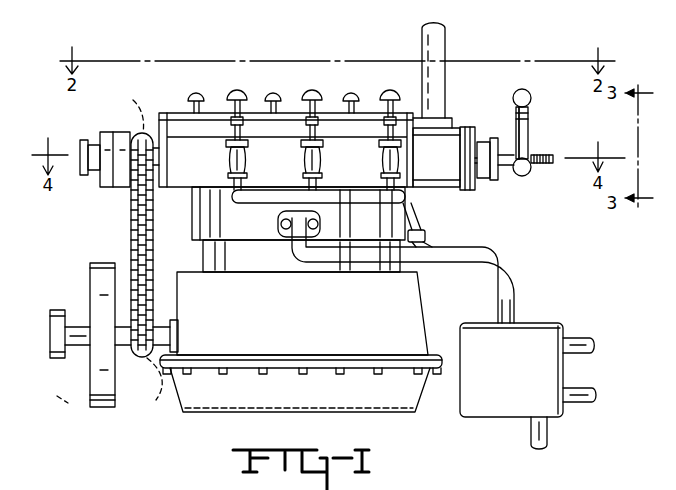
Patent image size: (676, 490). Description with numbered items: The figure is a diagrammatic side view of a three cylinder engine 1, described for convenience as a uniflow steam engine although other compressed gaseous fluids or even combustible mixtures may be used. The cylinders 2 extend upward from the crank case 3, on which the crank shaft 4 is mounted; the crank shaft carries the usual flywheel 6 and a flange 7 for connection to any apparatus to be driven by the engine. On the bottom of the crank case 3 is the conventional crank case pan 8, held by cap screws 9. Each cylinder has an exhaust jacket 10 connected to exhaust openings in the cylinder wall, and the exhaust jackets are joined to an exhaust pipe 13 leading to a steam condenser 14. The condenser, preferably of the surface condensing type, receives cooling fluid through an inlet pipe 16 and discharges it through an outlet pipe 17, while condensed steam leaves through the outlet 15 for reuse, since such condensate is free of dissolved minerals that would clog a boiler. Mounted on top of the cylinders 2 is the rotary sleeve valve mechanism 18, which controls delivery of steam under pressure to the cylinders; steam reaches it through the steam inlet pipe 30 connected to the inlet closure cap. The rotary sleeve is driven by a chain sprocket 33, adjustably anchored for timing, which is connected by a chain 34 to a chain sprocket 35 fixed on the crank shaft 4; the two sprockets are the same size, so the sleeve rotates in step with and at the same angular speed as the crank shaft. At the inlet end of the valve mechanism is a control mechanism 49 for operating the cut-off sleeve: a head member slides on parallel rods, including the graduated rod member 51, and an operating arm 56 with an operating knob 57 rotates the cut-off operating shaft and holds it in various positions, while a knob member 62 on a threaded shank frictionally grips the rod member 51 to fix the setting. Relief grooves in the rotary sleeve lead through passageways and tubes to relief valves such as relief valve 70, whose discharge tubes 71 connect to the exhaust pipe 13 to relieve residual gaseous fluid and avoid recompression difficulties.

The three cylinder engine 1 is at (182, 221).
The cylinders 2 is at (203, 256).
The crank case 3 is at (417, 302).
The crank shaft 4 is at (80, 346).
The flywheel 6 is at (100, 407).
The flange 7 is at (55, 358).
The crank case pan 8 is at (417, 413).
The cap screws 9 is at (340, 375).
The exhaust jacket 10 is at (405, 194).
The exhaust pipe 13 is at (517, 283).
The steam condenser 14 is at (505, 407).
The outlet 15 is at (549, 436).
The inlet pipe 16 is at (596, 395).
The outlet pipe 17 is at (593, 345).
The rotary sleeve valve mechanism 18 is at (184, 104).
The steam inlet pipe 30 is at (427, 48).
The chain sprocket 33 is at (124, 111).
The chain 34 is at (131, 226).
The chain sprocket 35 is at (109, 384).
The control mechanism 49 is at (542, 139).
The rod member 51 is at (545, 166).
The operating arm 56 is at (516, 128).
The operating knob 57 is at (532, 100).
The knob member 62 is at (532, 178).
The relief valve 70 is at (232, 158).
The discharge tubes 71 is at (418, 222).